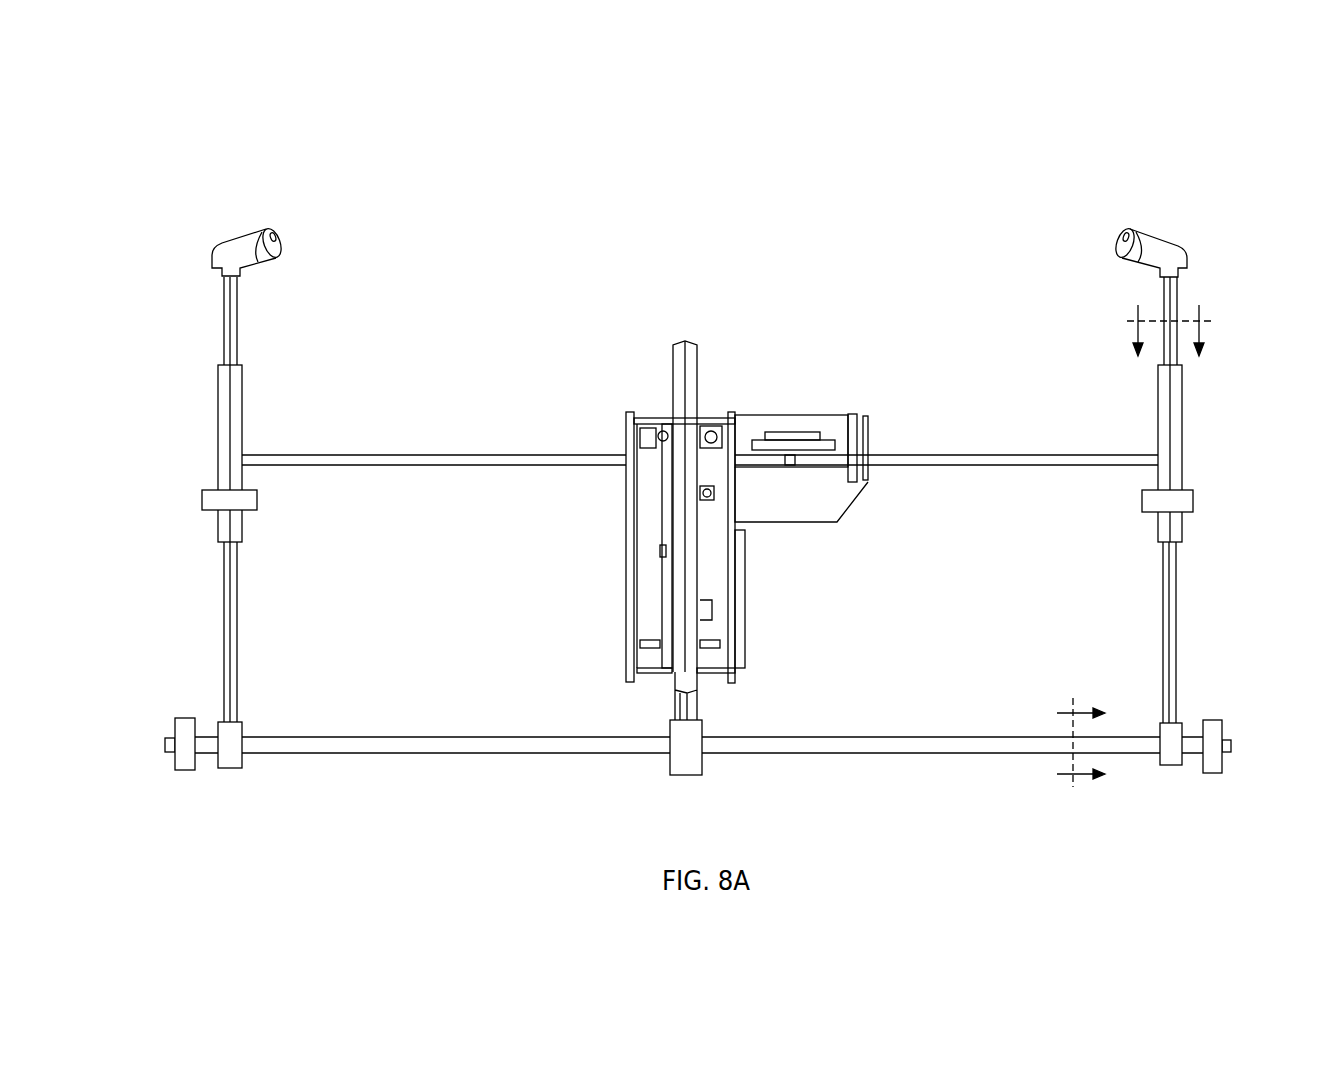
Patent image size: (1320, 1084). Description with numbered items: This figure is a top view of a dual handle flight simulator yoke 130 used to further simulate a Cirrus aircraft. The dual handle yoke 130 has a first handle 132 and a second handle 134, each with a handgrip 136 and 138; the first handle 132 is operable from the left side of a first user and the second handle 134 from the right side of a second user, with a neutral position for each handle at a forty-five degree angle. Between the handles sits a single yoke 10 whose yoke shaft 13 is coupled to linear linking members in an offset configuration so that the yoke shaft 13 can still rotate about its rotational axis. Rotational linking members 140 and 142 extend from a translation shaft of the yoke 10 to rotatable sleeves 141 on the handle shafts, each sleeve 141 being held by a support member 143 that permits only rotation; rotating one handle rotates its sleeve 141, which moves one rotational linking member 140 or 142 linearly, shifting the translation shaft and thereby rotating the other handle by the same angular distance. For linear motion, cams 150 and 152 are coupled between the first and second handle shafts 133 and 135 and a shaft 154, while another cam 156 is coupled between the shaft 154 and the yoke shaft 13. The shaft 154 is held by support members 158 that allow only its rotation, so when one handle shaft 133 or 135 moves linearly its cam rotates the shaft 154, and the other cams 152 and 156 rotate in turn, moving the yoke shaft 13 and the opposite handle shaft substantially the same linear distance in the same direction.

The dual handle flight simulator yoke 130 is at (587, 163).
The yoke 10 is at (751, 378).
The yoke shaft 13 is at (680, 683).
The first handle 132 is at (1093, 203).
The second handle 134 is at (320, 232).
The handgrip 136 is at (1121, 246).
The handgrip 138 is at (285, 245).
The first handle shaft 133 is at (1175, 618).
The second handle shaft 135 is at (225, 628).
The rotational linking member 140 is at (985, 455).
The rotatable sleeve 141 is at (1175, 460).
The rotational linking member 142 is at (352, 458).
The support member 143 is at (1177, 501).
The cam 150 is at (1168, 752).
The cam 152 is at (228, 752).
The shaft 154 is at (1027, 745).
The cam 156 is at (685, 753).
The support member 158 is at (185, 763).